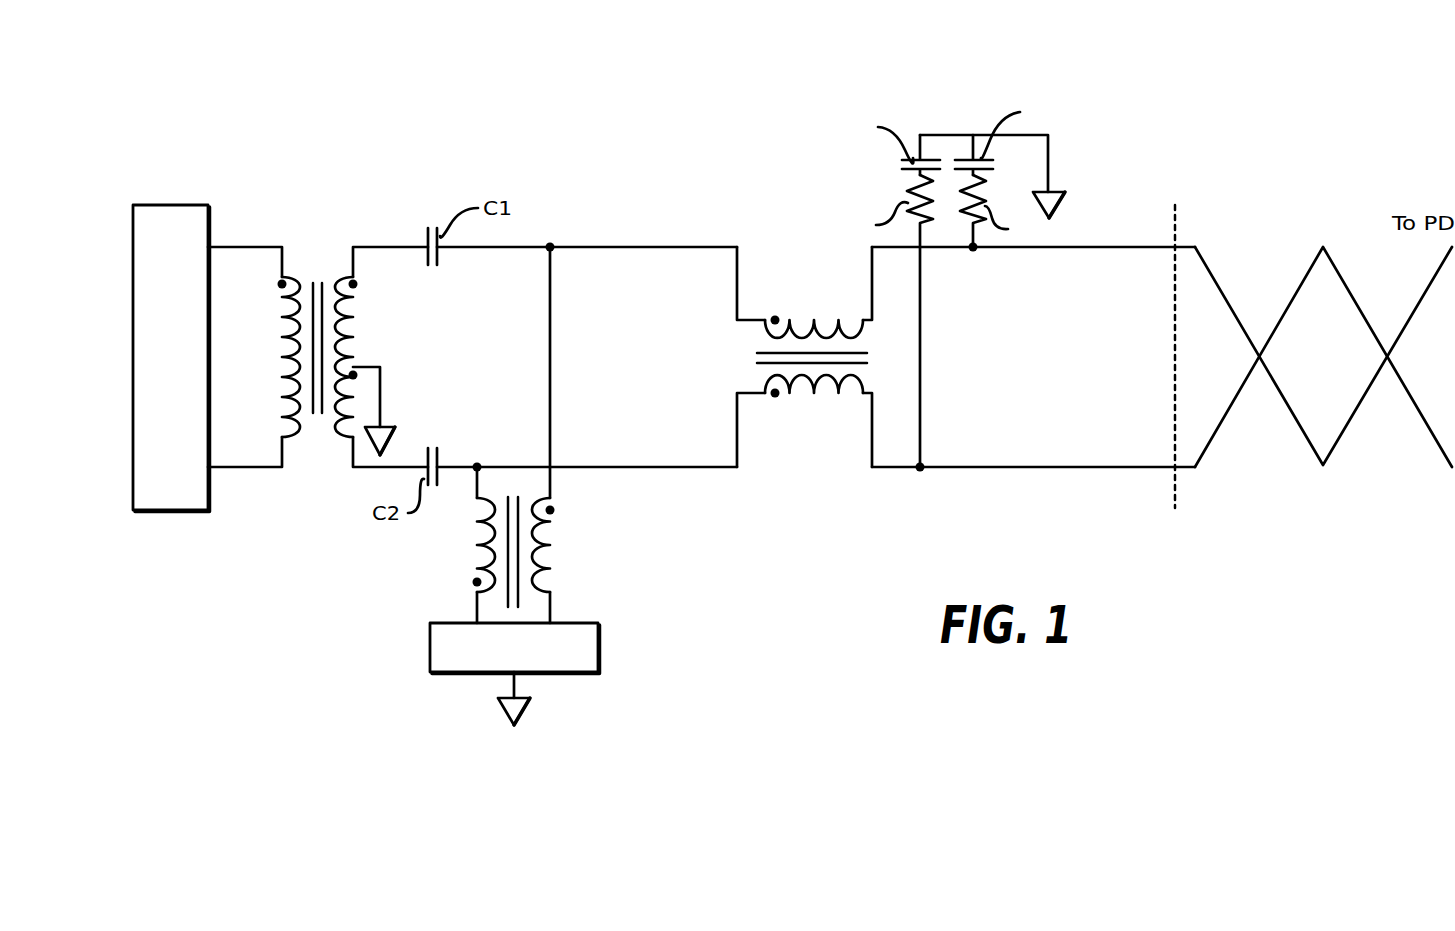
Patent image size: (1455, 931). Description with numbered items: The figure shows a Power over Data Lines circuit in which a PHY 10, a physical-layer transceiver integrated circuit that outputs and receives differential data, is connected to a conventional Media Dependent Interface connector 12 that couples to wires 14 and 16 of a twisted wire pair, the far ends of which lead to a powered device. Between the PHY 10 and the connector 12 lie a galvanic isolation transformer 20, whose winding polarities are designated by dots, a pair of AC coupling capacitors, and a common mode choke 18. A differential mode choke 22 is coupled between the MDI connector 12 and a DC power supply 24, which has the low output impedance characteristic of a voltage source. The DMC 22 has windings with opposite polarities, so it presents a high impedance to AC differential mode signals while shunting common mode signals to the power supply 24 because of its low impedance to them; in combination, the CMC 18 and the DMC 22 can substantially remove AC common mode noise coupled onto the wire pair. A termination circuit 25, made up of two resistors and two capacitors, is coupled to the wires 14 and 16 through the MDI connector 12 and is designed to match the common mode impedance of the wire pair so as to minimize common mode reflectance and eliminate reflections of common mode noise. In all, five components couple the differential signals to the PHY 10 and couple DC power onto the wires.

The PHY 10 is at (133, 313).
The Media Dependent Interface connector 12 is at (1173, 227).
The wire 14 is at (1223, 293).
The wire 16 is at (1223, 421).
The common mode choke 18 is at (822, 318).
The galvanic isolation transformer 20 is at (320, 476).
The differential mode choke 22 is at (481, 537).
The DC power supply 24 is at (430, 661).
The termination circuit 25 is at (834, 169).